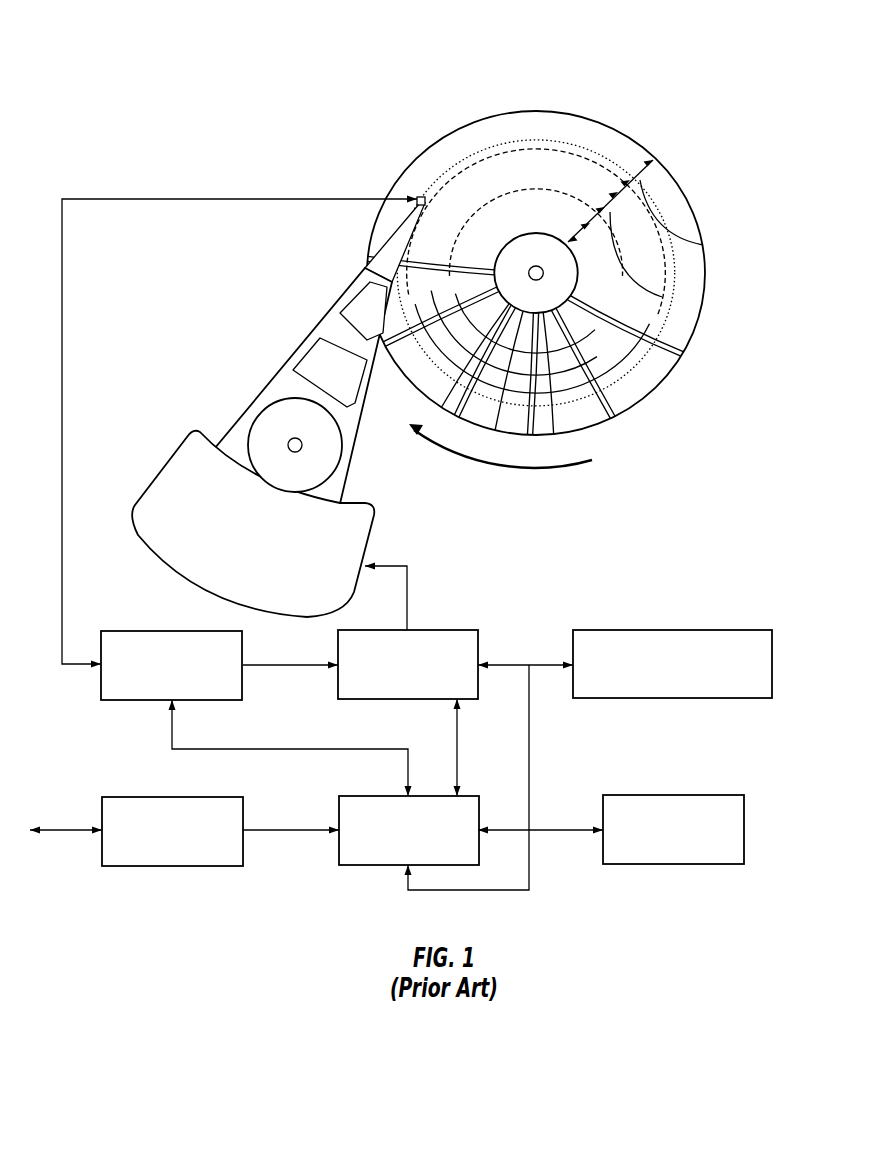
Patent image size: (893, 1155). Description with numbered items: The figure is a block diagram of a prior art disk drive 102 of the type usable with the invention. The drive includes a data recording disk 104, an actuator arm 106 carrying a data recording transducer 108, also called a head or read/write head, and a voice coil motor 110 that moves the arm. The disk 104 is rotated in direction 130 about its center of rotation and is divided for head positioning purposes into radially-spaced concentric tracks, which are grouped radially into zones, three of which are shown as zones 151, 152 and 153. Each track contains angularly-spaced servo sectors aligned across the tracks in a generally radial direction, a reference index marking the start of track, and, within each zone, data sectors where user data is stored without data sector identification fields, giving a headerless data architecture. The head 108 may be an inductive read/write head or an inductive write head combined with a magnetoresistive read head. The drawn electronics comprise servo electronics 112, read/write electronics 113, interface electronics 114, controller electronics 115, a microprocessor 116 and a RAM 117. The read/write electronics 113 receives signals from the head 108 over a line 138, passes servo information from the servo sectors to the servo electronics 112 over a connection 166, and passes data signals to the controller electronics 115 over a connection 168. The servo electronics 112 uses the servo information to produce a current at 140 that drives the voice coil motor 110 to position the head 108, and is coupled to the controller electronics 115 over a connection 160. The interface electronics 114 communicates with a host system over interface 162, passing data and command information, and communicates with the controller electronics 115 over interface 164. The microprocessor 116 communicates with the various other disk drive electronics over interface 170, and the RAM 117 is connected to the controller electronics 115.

The disk drive 102 is at (144, 51).
The data recording disk 104 is at (510, 113).
The actuator arm 106 is at (350, 292).
The data recording transducer 108 is at (420, 197).
The voice coil motor 110 is at (193, 440).
The servo electronics 112 is at (455, 630).
The read/write electronics 113 is at (150, 631).
The interface electronics 114 is at (143, 797).
The controller electronics 115 is at (358, 865).
The microprocessor 116 is at (748, 630).
The RAM 117 is at (722, 795).
The direction of rotation 130 is at (548, 470).
The head signal line 138 is at (124, 199).
The current 140 is at (408, 590).
The zone 151 is at (703, 246).
The zone 152 is at (700, 305).
The zone 153 is at (572, 238).
The servo-controller bus 160 is at (460, 752).
The interface 162 is at (86, 830).
The interface 164 is at (262, 830).
The read/write-servo signal 166 is at (270, 665).
The controller-read/write bus 168 is at (296, 749).
The interface 170 is at (530, 752).